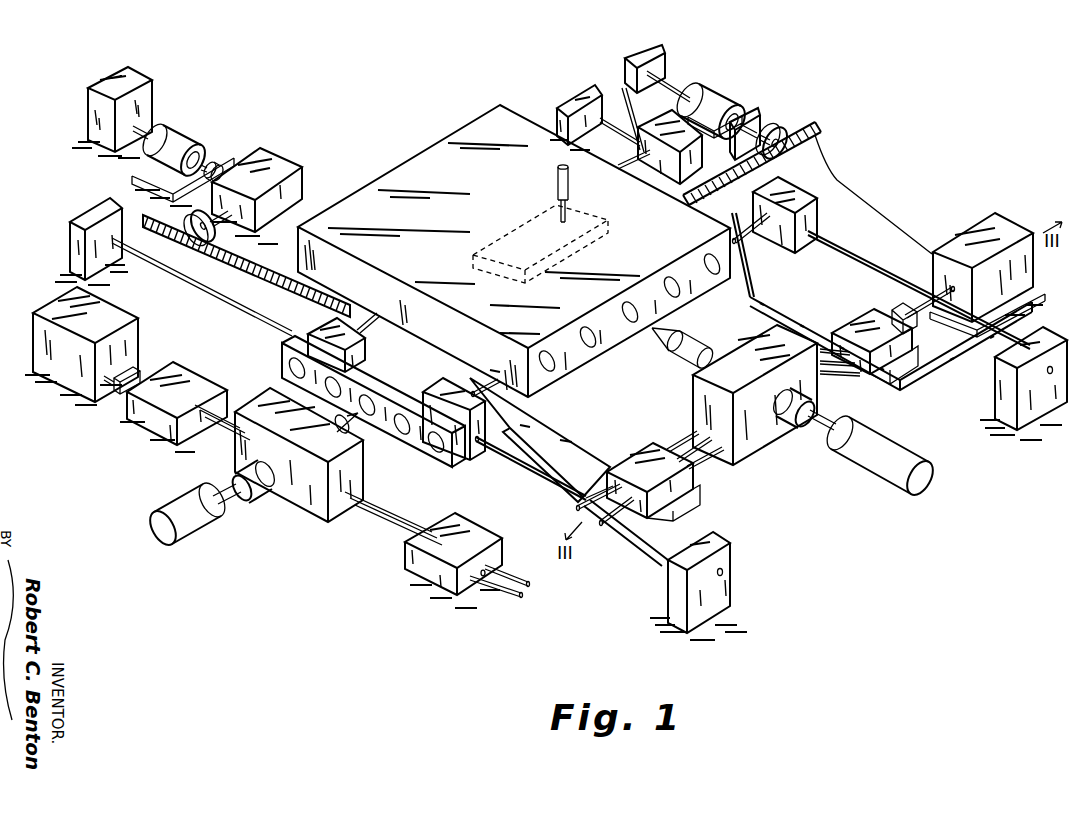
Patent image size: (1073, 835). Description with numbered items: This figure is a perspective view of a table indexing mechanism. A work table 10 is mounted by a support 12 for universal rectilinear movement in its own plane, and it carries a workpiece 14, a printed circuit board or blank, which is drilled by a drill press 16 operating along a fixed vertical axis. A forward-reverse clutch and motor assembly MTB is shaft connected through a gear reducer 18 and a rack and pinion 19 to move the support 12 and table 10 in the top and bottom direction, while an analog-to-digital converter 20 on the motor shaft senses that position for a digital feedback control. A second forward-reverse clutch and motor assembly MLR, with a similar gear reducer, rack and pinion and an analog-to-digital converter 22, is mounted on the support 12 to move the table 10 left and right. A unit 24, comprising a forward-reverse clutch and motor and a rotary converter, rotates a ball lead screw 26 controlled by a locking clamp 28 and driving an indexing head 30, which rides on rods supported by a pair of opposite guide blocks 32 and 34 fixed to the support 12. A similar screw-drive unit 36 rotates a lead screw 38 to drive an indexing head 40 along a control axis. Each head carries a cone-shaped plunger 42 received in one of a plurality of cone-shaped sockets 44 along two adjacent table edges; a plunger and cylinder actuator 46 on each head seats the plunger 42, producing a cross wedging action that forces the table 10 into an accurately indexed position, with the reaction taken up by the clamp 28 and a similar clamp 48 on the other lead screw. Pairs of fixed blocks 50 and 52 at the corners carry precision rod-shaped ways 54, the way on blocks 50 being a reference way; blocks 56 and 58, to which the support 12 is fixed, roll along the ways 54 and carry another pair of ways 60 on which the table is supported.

The work table 10 is at (426, 150).
The support 12 is at (582, 433).
The workpiece 14 is at (526, 226).
The drill press 16 is at (570, 177).
The gear reducer 18 is at (280, 157).
The rack and pinion 19 is at (190, 242).
The analog-to-digital converter 20 is at (145, 64).
The analog-to-digital converter 22 is at (646, 45).
The unit 24 is at (1035, 270).
The ball lead screw 26 is at (692, 432).
The locking clamp 28 is at (916, 316).
The indexing head 30 is at (781, 437).
The guide block 32 is at (698, 483).
The guide block 34 is at (882, 376).
The screw-drive unit 36 is at (113, 311).
The lead screw 38 is at (378, 527).
The indexing head 40 is at (294, 496).
The cone-shaped plunger 42 is at (356, 426).
The cone-shaped socket 44 is at (290, 365).
The plunger and cylinder actuator 46 is at (177, 505).
The clamp 48 is at (134, 364).
The fixed block 50 is at (68, 242).
The fixed block 52 is at (572, 90).
The rod-shaped way 54 is at (552, 483).
The block 56 is at (485, 415).
The block 58 is at (368, 358).
The way 60 is at (358, 328).
The forward-reverse clutch and motor assembly MTB is at (189, 125).
The forward-reverse clutch and motor assembly MLR is at (712, 94).